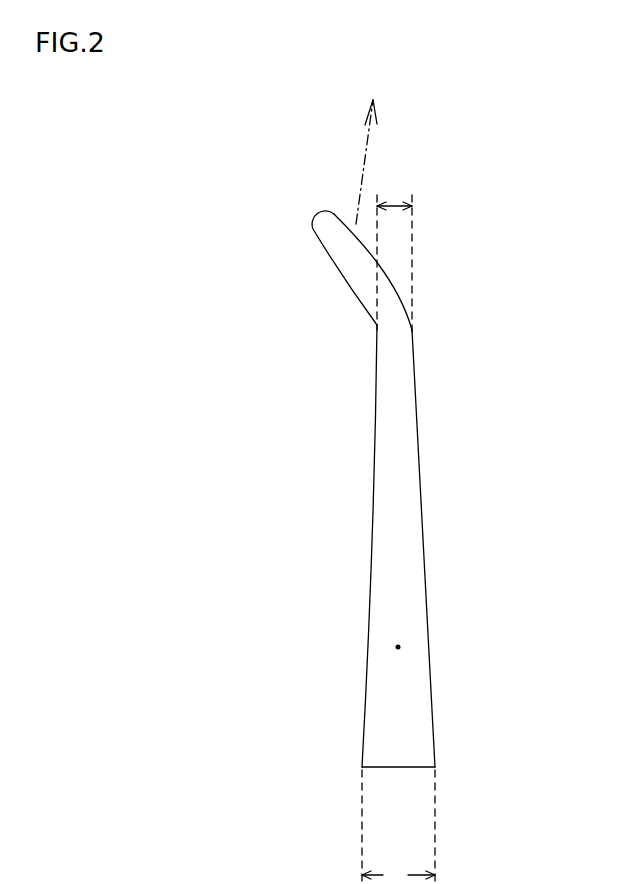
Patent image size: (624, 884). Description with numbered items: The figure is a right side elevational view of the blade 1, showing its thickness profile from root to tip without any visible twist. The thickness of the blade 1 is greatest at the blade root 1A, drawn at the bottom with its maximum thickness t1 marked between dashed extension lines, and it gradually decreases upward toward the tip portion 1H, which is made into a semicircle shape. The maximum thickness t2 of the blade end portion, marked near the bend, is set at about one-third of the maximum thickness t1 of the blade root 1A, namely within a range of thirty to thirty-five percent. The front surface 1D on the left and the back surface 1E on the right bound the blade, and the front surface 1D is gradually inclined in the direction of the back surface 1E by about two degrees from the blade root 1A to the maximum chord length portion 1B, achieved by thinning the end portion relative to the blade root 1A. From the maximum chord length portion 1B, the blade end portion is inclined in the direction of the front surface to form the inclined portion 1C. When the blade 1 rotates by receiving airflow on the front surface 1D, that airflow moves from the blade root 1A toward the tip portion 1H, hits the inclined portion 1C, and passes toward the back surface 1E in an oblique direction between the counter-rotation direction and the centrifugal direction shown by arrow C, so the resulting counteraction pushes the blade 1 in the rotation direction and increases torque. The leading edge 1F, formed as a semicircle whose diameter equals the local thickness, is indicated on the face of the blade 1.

The blade 1 is at (383, 479).
The blade root 1A is at (436, 773).
The maximum chord length portion 1B is at (377, 328).
The inclined portion 1C is at (375, 258).
The front surface 1D is at (366, 603).
The back surface 1E is at (426, 503).
The leading edge 1F is at (398, 647).
The tip portion 1H is at (312, 214).
The arrow C is at (371, 145).
The maximum thickness of the blade root t1 is at (398, 827).
The maximum thickness of the blade end portion t2 is at (394, 253).